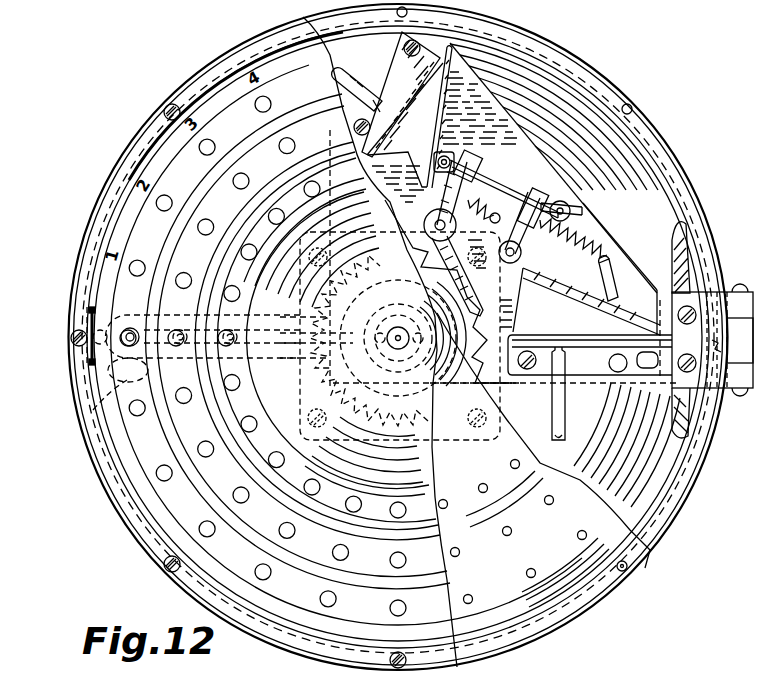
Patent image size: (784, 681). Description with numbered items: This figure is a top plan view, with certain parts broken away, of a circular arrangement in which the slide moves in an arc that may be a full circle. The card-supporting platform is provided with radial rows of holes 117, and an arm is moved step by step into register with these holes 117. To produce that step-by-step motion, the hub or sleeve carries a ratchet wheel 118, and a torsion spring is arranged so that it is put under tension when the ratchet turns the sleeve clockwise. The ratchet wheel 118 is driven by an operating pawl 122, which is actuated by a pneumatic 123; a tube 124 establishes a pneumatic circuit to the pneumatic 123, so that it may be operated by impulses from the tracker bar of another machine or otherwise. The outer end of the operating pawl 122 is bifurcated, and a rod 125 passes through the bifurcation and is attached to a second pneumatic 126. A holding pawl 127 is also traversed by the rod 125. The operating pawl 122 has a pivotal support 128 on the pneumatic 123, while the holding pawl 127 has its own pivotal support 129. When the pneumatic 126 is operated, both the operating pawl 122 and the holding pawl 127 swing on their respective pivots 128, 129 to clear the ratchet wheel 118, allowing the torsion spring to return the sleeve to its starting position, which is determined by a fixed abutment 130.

The holes 117 is at (586, 537).
The ratchet wheel 118 is at (532, 307).
The operating pawl 122 is at (578, 203).
The pneumatic 123 is at (617, 293).
The tube 124 is at (565, 397).
The rod 125 is at (512, 177).
The pneumatic 126 is at (423, 110).
The holding pawl 127 is at (446, 157).
The pivotal support 128 is at (524, 266).
The pivotal support 129 is at (406, 232).
The fixed abutment 130 is at (117, 392).